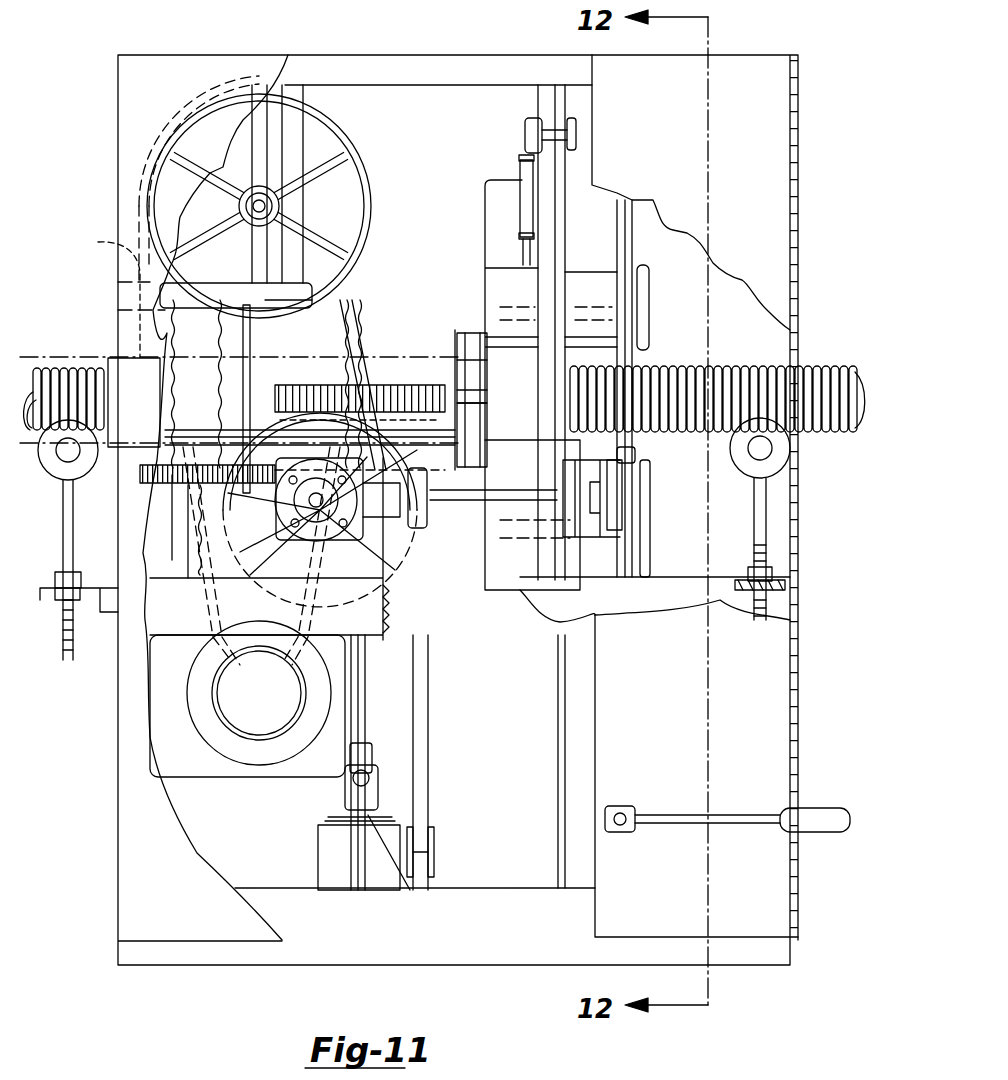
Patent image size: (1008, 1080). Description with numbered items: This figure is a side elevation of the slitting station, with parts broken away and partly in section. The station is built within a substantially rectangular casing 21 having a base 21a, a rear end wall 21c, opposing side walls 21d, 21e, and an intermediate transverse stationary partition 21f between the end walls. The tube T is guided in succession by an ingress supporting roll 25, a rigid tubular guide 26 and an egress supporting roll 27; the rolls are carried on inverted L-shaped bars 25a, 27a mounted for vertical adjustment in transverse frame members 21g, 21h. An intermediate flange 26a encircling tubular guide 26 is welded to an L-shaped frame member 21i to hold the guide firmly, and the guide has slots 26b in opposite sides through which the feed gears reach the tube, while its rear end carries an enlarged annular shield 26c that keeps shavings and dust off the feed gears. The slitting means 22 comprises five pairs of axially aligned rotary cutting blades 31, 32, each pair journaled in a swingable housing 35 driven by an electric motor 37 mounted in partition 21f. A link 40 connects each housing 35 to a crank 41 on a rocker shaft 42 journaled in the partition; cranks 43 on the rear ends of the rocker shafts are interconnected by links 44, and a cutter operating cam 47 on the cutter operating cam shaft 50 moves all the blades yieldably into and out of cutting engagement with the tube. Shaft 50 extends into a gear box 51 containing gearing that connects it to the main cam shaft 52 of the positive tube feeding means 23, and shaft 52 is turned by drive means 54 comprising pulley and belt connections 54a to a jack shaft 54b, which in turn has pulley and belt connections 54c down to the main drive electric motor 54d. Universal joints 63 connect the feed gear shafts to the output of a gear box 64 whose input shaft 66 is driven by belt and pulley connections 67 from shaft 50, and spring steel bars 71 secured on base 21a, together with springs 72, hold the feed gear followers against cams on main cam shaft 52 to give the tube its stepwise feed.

The casing 21 is at (800, 712).
The base 21a is at (490, 888).
The rear end wall 21c is at (796, 565).
The side wall 21d is at (455, 100).
The side wall 21e is at (175, 868).
The intermediate transverse stationary wall or partition 21f is at (557, 702).
The transverse frame member 21g is at (780, 600).
The transverse frame member 21h is at (78, 595).
The L-shaped frame member 21i is at (99, 290).
The slitting means 22 is at (472, 296).
The positive tube feeding means 23 is at (289, 388).
The ingress supporting roll 25 is at (772, 450).
The inverted L-shaped bar 25a is at (765, 518).
The rigid tubular guide 26 is at (370, 360).
The intermediate flange 26a is at (245, 400).
The slots 26b is at (310, 385).
The enlarged annular shield or ring 26c is at (435, 310).
The egress or front supporting roll 27 is at (60, 465).
The inverted L-shaped bar 27a is at (64, 520).
The rotary cutting blade 31 is at (456, 366).
The rotary cutting blade 32 is at (488, 350).
The swingable or pivoted housing 35 is at (498, 228).
The electric drive motor 37 is at (650, 298).
The link 40 is at (522, 192).
The crank 41 is at (524, 133).
The rocker shaft 42 is at (578, 133).
The crank 43 is at (635, 452).
The link 44 is at (633, 255).
The rotary cutter operating cam 47 is at (612, 480).
The cutter operating cam shaft 50 is at (476, 500).
The gear box 51 is at (290, 590).
The main cam shaft 52 is at (290, 500).
The drive means 54 is at (362, 135).
The pulley and belt connections 54a is at (355, 345).
The jack shaft 54b is at (270, 206).
The pulley and belt connections 54c is at (372, 295).
The main drive electric motor 54d is at (292, 702).
The universal joint 63 is at (344, 790).
The gear box 64 is at (330, 888).
The input shaft 66 is at (434, 850).
The belt and pulley connections 67 is at (428, 775).
The yieldable or spring steel bar 71 is at (366, 692).
The spring 72 is at (175, 482).
The tube T is at (98, 350).